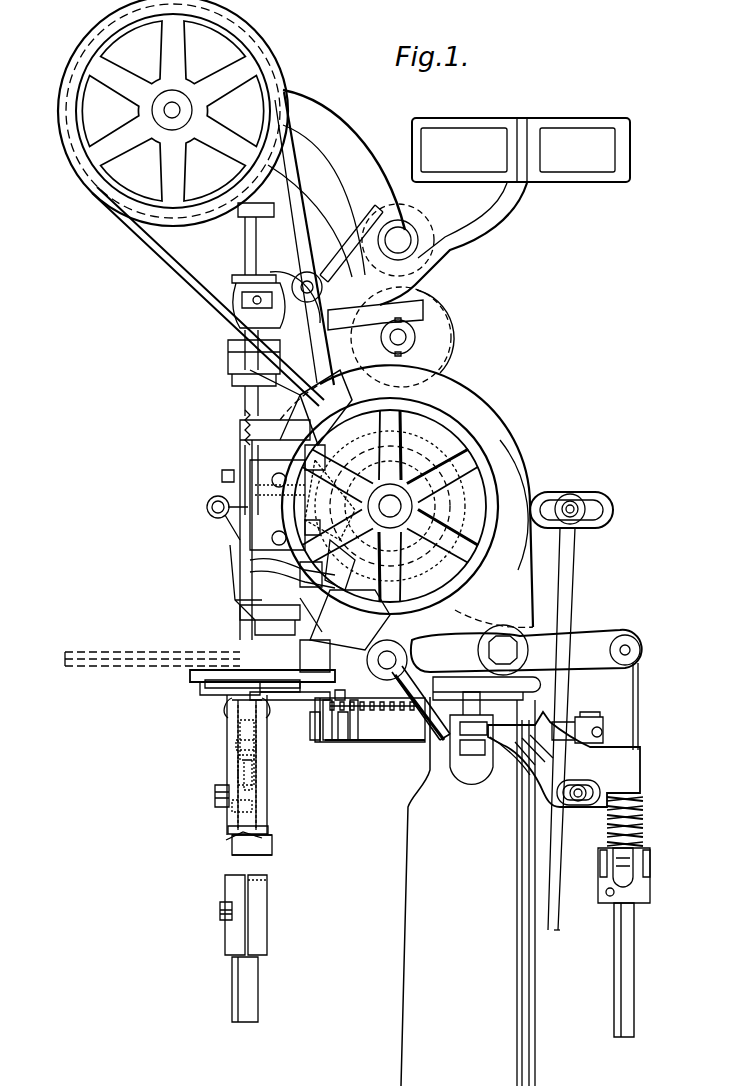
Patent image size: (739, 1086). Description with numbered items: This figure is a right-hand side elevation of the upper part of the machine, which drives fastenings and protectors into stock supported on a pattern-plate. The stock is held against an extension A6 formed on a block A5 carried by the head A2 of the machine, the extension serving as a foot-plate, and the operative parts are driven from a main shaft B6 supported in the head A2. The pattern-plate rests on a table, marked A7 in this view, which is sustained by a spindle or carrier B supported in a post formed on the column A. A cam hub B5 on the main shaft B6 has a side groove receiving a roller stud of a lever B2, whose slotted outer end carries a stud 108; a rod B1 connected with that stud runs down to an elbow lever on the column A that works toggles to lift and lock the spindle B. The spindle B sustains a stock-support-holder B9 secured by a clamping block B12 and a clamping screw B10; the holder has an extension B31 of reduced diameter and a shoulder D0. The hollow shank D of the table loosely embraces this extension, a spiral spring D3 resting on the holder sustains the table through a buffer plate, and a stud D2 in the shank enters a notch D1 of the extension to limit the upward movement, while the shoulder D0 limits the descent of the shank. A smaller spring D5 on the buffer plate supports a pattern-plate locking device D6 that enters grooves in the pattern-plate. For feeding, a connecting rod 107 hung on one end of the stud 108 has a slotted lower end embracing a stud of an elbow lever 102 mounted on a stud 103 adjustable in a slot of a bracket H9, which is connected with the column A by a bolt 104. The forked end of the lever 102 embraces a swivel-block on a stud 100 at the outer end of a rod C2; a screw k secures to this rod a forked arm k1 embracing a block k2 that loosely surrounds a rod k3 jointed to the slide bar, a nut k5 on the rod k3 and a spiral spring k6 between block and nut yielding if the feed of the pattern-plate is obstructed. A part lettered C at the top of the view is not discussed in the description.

The driving pulley C is at (238, 668).
The spindle or carrier B is at (238, 988).
The main shaft B6 is at (395, 505).
The cam hub B5 is at (477, 500).
The lever B2 is at (590, 494).
The rod B1 is at (205, 684).
The stock-support-holder B9 is at (232, 862).
The clamping block B12 is at (226, 890).
The clamping screw B10 is at (222, 914).
The extension of reduced diameter B31 is at (236, 773).
The stud 108 is at (567, 505).
The connecting rod 107 is at (572, 603).
The column A is at (410, 890).
The head A2 is at (527, 573).
The block A5 is at (302, 606).
The extension A6 is at (250, 668).
The table A7 is at (290, 676).
The hollow shank D is at (268, 818).
The shoulder D0 is at (270, 838).
The notch or recess D1 is at (238, 808).
The stud D2 is at (228, 803).
The spiral spring D3 is at (235, 752).
The spiral spring D5 is at (233, 727).
The pattern-plate locking device D6 is at (243, 668).
The screw k is at (300, 712).
The forked arm k1 is at (318, 702).
The block k2 is at (340, 697).
The rod k3 is at (355, 742).
The nut k5 is at (313, 742).
The spiral spring k6 is at (342, 742).
The rod C2 is at (408, 703).
The bracket H9 is at (645, 770).
The stud 100 is at (597, 727).
The elbow lever 102 is at (608, 745).
The stud 103 is at (578, 800).
The bolt 104 is at (478, 756).